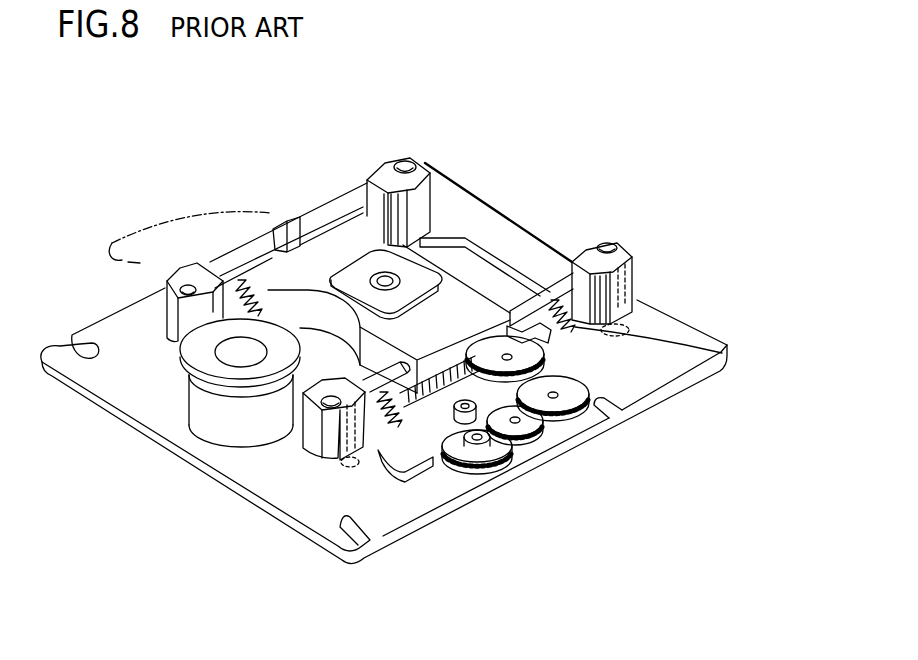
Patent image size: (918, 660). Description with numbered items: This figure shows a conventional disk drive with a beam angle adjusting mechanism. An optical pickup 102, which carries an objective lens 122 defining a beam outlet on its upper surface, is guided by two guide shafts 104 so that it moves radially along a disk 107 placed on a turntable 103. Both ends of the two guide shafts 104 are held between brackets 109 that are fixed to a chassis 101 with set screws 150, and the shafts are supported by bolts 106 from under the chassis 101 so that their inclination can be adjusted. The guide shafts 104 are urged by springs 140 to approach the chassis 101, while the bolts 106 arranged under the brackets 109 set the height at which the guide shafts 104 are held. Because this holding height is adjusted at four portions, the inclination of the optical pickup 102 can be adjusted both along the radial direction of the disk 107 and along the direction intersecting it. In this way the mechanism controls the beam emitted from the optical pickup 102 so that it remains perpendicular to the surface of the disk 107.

The chassis 101 is at (630, 390).
The optical pickup 102 is at (506, 352).
The turntable 103 is at (233, 378).
The guide shafts 104 is at (242, 264).
The bolts 106 is at (627, 320).
The disk 107 is at (256, 208).
The brackets 109 is at (180, 274).
The objective lens 122 is at (388, 280).
The springs 140 is at (363, 213).
The set screws 150 is at (408, 165).